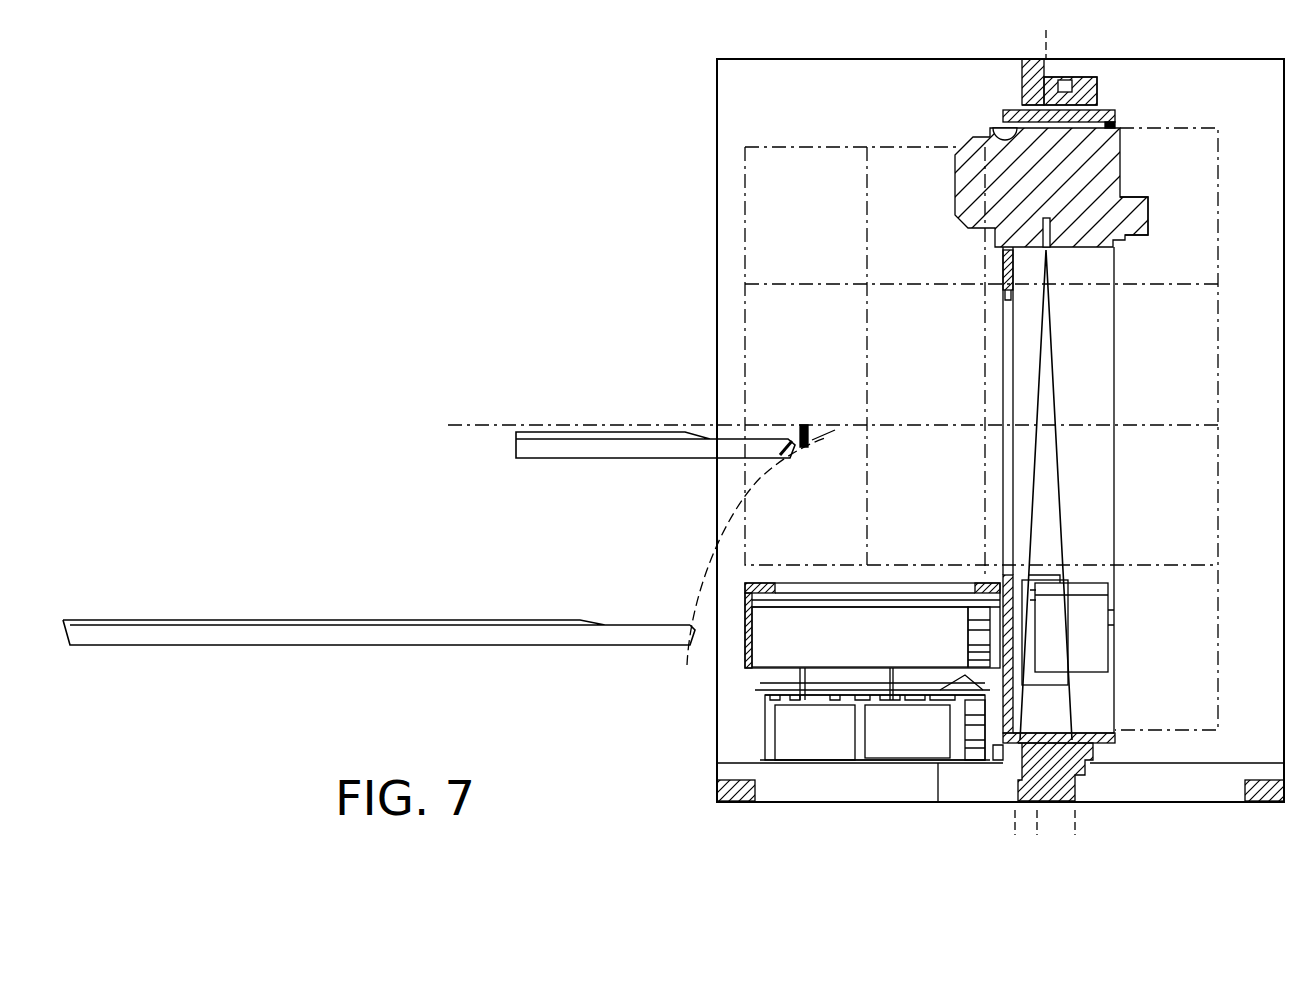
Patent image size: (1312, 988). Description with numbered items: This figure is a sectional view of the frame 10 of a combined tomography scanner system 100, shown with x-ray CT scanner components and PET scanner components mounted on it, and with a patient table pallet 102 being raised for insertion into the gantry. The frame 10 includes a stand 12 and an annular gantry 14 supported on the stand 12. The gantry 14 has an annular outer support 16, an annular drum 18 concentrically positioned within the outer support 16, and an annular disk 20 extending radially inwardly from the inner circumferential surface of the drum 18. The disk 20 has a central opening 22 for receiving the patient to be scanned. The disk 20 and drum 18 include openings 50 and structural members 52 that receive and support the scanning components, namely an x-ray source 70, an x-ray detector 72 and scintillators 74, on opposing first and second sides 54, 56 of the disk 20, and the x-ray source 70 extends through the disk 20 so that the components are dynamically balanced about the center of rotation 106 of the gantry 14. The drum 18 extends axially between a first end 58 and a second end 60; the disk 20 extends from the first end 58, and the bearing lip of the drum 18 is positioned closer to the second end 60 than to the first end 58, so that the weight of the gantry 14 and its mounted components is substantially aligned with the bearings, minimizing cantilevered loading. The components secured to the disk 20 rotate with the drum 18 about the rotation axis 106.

The combined tomography scanner system 100 is at (683, 124).
The frame 10 is at (985, 82).
The stand 12 is at (912, 788).
The annular gantry 14 is at (1123, 97).
The annular outer support 16 is at (1072, 72).
The annular drum 18 is at (1118, 124).
The annular disk 20 is at (1003, 258).
The central opening 22 is at (1003, 292).
The openings 50 is at (1002, 134).
The structural members 52 is at (985, 582).
The first side 54 is at (897, 224).
The second side 56 is at (1086, 338).
The first end 58 is at (995, 762).
The second end 60 is at (1118, 745).
The x-ray source 70 is at (1150, 212).
The x-ray detector 72 is at (1060, 575).
The scintillators 74 is at (893, 688).
The patient table pallet 102 is at (548, 457).
The center of rotation 106 is at (530, 425).